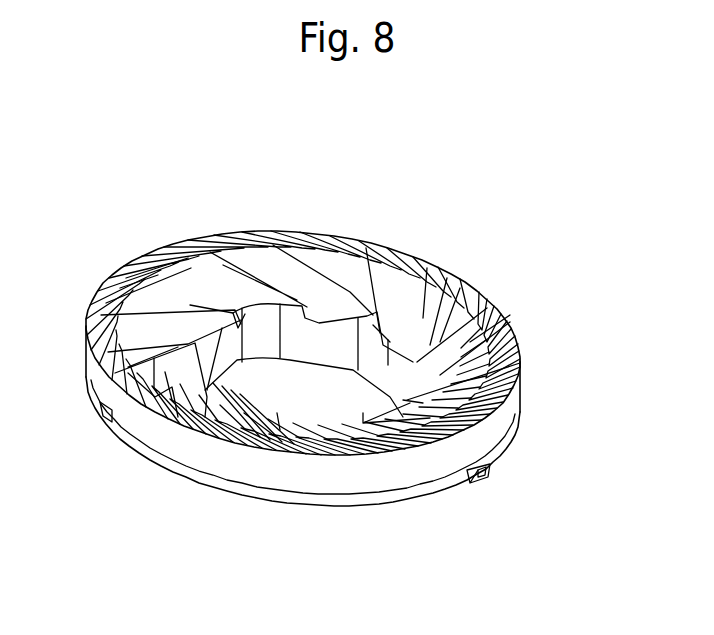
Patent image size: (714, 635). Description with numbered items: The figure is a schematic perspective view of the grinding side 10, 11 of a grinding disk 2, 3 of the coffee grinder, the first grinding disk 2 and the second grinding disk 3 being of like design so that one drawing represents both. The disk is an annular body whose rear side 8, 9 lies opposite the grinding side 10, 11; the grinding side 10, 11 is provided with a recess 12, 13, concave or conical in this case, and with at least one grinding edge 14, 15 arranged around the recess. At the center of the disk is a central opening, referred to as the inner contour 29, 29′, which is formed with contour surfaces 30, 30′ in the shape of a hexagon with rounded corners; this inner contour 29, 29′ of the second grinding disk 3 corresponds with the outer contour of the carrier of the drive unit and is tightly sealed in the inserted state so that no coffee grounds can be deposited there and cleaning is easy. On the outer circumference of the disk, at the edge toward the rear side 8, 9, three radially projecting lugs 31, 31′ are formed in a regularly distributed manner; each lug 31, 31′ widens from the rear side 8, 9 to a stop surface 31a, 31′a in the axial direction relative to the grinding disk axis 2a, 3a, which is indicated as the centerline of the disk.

The first grinding disk 2 is at (303, 306).
The second grinding disk 3 is at (366, 238).
The grinding disk axis 2a is at (303, 284).
The grinding disk axis 3a is at (328, 234).
The grinding side 10 is at (288, 250).
The recess 12 is at (288, 250).
The grinding edge 14 is at (173, 243).
The grinding side 11 is at (293, 280).
The recess 13 is at (293, 280).
The grinding edge 15 is at (293, 280).
The rear side 8 is at (303, 438).
The rear side 9 is at (162, 467).
The lug 31 is at (286, 486).
The lug 31′ is at (477, 483).
The stop surface 31a is at (569, 458).
The stop surface 31′a is at (492, 467).
The inner contour 29 is at (289, 444).
The inner contour 29′ is at (294, 345).
The contour surfaces 30 is at (314, 464).
The contour surfaces 30′ is at (342, 360).